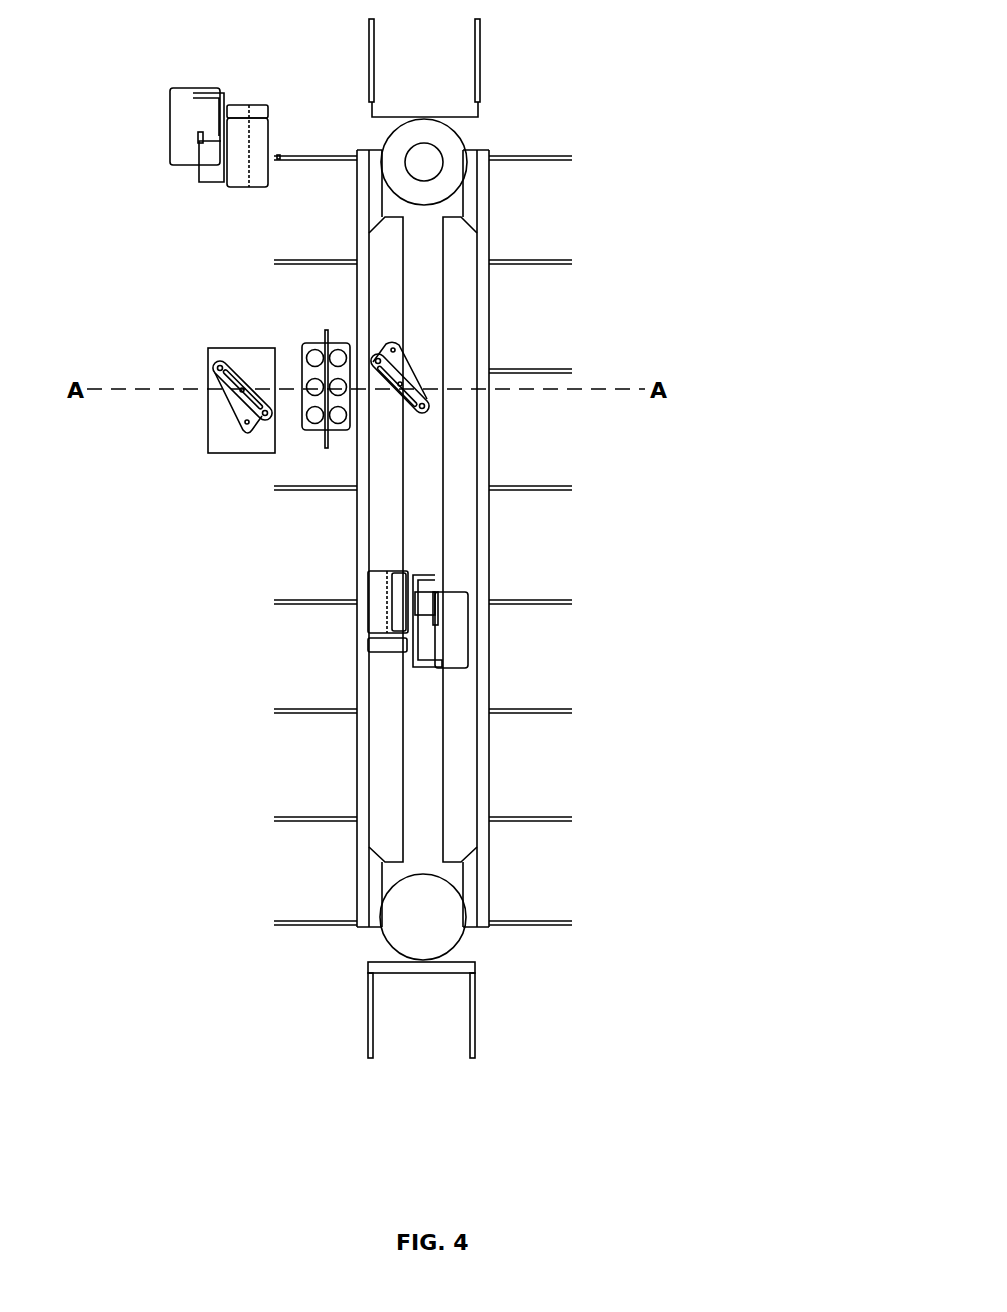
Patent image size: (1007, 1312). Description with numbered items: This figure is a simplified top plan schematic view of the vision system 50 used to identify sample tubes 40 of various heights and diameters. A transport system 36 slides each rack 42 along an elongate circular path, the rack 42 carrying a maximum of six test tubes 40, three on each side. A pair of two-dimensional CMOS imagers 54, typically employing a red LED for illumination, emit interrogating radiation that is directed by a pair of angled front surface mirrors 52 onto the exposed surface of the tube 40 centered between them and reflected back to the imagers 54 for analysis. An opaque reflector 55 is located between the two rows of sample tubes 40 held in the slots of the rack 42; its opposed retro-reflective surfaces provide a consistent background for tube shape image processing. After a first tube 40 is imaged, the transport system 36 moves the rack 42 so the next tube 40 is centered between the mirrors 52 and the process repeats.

The transport system 36 is at (323, 827).
The sample tube 40 is at (315, 347).
The rack 42 is at (297, 348).
The vision system 50 is at (702, 243).
The front surface mirror 52 is at (407, 358).
The imager 54 is at (170, 122).
The reflector 55 is at (326, 442).